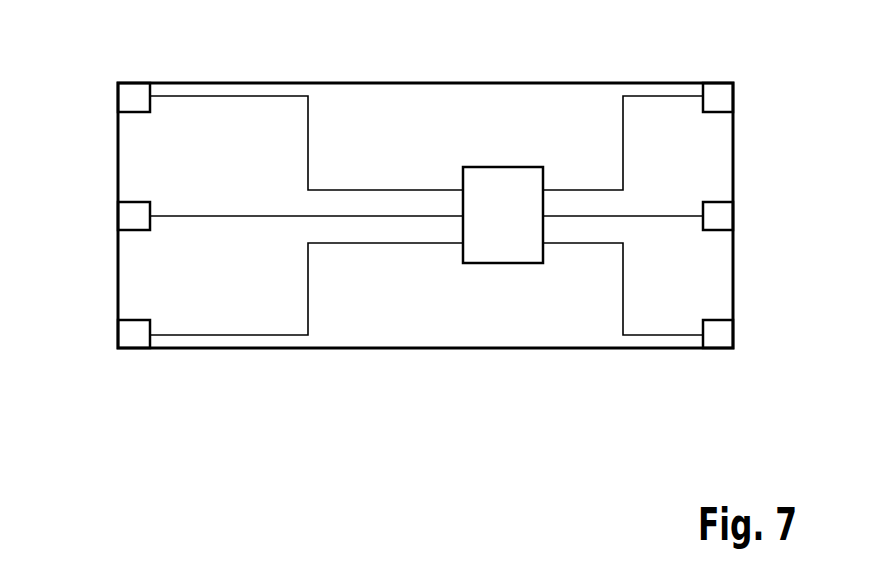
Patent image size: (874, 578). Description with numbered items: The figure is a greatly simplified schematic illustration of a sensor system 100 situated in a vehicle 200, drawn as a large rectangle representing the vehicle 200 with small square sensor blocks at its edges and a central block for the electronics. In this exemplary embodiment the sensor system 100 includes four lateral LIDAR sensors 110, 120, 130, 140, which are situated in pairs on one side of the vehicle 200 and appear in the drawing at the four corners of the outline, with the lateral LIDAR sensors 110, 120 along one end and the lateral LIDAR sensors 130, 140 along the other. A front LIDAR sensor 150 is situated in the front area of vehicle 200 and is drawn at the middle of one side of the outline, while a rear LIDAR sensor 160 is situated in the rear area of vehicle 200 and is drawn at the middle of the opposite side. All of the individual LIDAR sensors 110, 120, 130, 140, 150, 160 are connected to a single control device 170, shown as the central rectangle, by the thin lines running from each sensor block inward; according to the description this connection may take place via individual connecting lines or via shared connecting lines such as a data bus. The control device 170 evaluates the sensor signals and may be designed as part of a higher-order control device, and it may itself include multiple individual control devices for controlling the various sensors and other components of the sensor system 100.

The sensor system 100 is at (549, 108).
The lateral LIDAR sensor 110 is at (718, 343).
The lateral LIDAR sensor 120 is at (133, 343).
The lateral LIDAR sensor 130 is at (719, 90).
The lateral LIDAR sensor 140 is at (134, 88).
The front LIDAR sensor 150 is at (733, 213).
The rear LIDAR sensor 160 is at (118, 214).
The control device 170 is at (500, 264).
The vehicle 200 is at (399, 83).